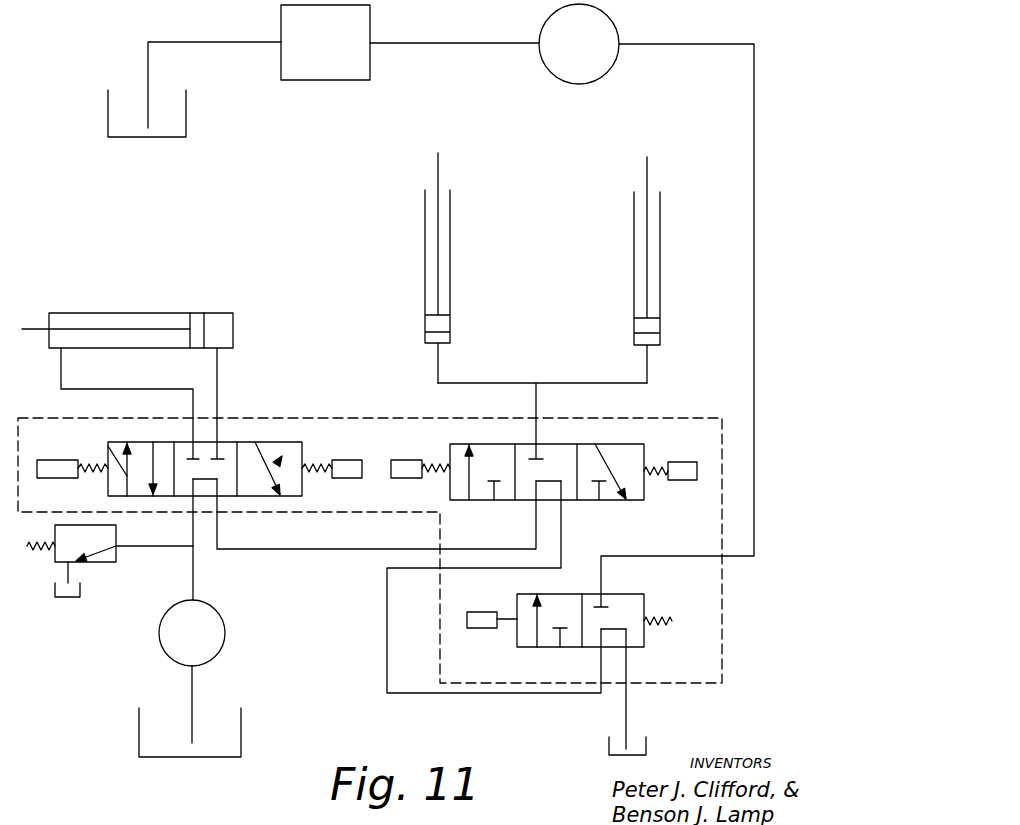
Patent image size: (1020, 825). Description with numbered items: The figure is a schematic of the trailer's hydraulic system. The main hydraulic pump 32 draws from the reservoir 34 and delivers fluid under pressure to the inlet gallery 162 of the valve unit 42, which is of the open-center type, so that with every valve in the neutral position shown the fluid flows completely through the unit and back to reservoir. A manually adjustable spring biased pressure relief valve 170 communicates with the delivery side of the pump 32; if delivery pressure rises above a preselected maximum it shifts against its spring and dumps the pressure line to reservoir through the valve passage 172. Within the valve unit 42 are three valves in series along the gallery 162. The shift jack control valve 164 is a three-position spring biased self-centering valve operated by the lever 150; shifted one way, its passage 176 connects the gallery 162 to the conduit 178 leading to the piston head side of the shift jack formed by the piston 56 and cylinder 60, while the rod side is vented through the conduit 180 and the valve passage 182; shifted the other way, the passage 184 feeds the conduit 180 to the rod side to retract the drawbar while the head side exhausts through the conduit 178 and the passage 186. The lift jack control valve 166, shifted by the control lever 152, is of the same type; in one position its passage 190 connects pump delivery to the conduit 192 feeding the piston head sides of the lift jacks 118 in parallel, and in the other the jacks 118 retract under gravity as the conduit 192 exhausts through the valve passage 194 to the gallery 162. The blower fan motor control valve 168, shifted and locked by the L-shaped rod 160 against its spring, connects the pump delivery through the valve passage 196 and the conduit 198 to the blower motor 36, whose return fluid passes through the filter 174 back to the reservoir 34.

The main hydraulic pump 32 is at (212, 612).
The reservoir 34 is at (186, 137).
The blower motor 36 is at (565, 80).
The valve unit 42 is at (723, 628).
The shift jack piston 56 is at (123, 290).
The shift jack cylinder 60 is at (233, 313).
The lift jacks 118 is at (450, 296).
The lever 150 is at (56, 437).
The control lever 152 is at (406, 462).
The L-shaped rod 160 is at (493, 590).
The inlet gallery 162 is at (193, 530).
The shift jack control valve 164 is at (240, 446).
The lift jack control valve 166 is at (645, 452).
The blower fan motor control valve 168 is at (647, 593).
The pressure relief valve 170 is at (121, 556).
The valve passage 172 is at (102, 562).
The filter 174 is at (302, 70).
The passage 176 is at (313, 435).
The conduit 178 is at (219, 380).
The conduit 180 is at (112, 368).
The valve passage 182 is at (303, 441).
The passage 184 is at (112, 446).
The passage 186 is at (158, 448).
The passage 190 is at (470, 476).
The conduit 192 is at (536, 403).
The valve passage 194 is at (605, 452).
The valve passage 196 is at (535, 624).
The conduit 198 is at (754, 450).